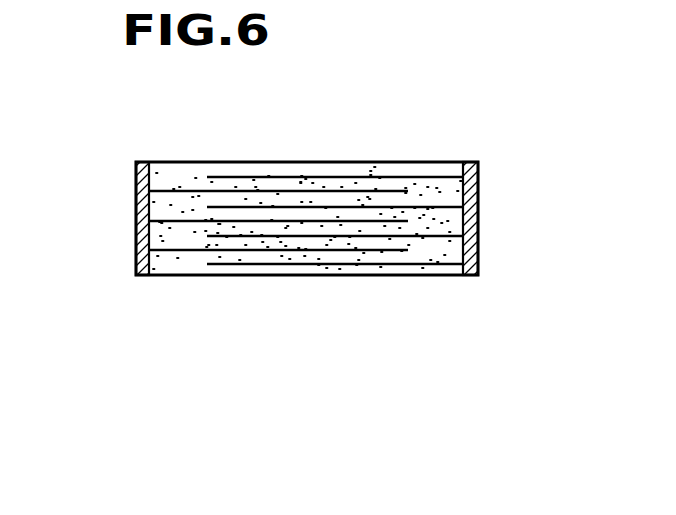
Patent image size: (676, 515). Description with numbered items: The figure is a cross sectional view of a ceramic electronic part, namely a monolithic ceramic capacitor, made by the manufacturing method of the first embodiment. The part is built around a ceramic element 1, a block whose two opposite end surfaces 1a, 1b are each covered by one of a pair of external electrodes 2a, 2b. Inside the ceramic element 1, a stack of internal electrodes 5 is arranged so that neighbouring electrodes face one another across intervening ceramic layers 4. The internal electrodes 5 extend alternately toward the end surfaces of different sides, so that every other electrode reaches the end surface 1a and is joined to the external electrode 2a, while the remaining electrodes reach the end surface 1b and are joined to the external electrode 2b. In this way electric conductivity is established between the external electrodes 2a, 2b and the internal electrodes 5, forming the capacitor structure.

The ceramic element 1 is at (425, 160).
The ceramic layers 4 is at (303, 195).
The internal electrodes 5 is at (269, 237).
The end surface 1a is at (135, 240).
The end surface 1b is at (478, 247).
The external electrode 2a is at (133, 212).
The external electrode 2b is at (478, 208).